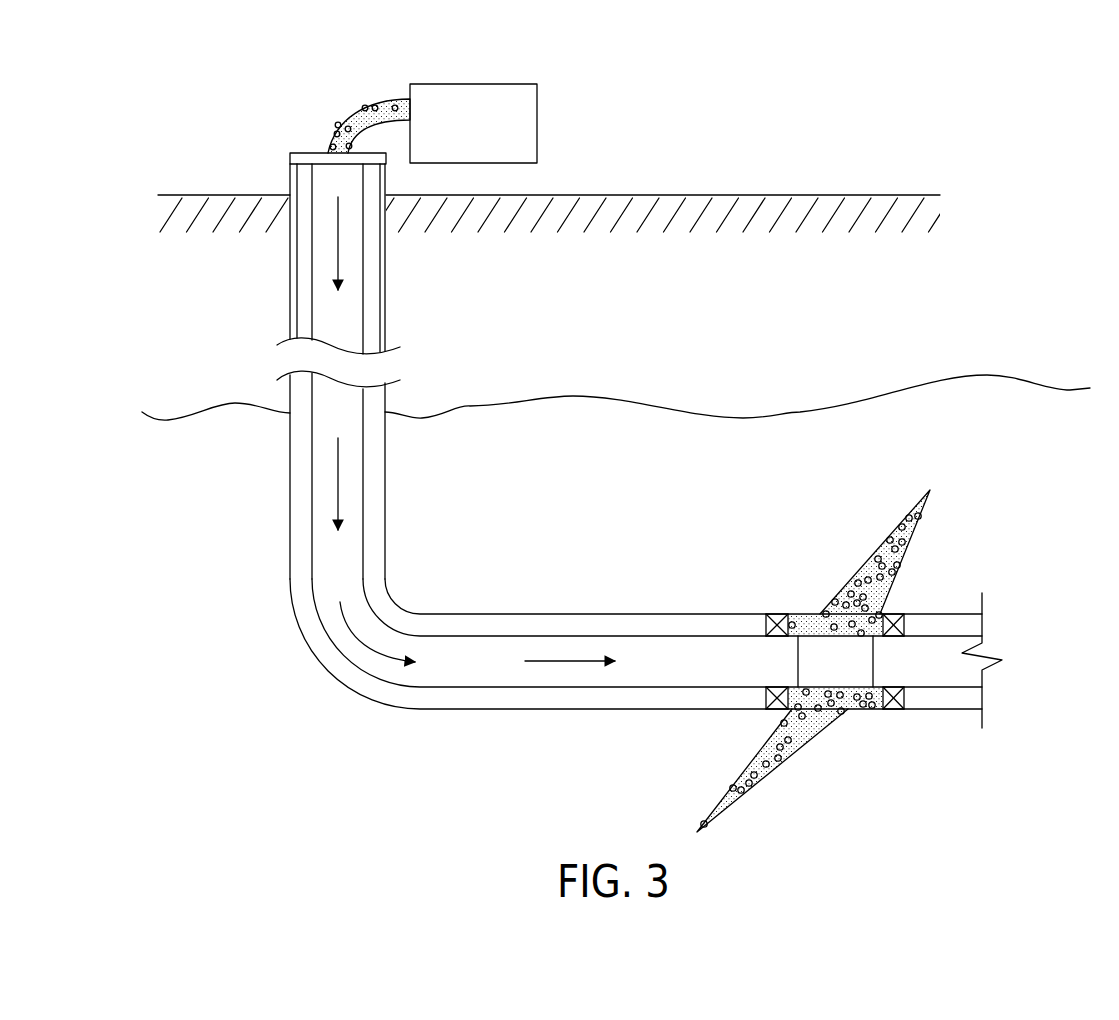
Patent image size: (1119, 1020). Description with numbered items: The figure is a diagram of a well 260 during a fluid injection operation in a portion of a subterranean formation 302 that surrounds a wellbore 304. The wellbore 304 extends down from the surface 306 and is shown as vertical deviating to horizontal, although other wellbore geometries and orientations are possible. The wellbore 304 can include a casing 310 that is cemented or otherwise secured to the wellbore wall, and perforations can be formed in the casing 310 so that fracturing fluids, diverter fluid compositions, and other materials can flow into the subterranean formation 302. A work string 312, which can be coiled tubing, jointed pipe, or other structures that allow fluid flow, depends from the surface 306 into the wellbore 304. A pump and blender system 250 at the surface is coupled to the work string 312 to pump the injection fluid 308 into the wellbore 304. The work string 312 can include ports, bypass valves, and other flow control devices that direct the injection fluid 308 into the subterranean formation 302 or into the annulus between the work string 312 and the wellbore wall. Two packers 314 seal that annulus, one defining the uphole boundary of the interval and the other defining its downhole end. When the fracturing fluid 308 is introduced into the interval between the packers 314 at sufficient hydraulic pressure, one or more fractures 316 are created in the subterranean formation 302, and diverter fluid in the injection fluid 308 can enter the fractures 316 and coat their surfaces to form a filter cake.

The pump and blender system 250 is at (475, 83).
The well 260 is at (601, 452).
The subterranean formation 302 is at (612, 462).
The wellbore 304 is at (305, 290).
The surface 306 is at (732, 193).
The fracturing fluid 308 is at (355, 118).
The casing 310 is at (290, 316).
The work string 312 is at (310, 523).
The packers 314 is at (777, 612).
The fractures 316 is at (872, 541).